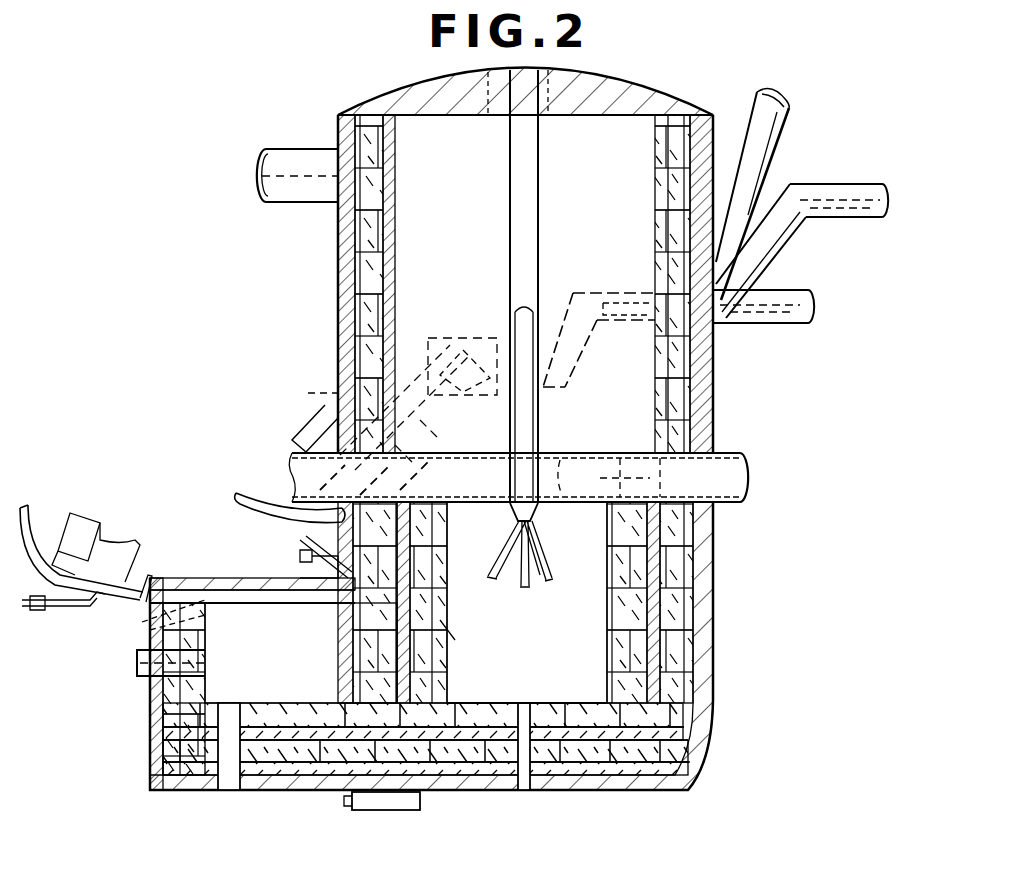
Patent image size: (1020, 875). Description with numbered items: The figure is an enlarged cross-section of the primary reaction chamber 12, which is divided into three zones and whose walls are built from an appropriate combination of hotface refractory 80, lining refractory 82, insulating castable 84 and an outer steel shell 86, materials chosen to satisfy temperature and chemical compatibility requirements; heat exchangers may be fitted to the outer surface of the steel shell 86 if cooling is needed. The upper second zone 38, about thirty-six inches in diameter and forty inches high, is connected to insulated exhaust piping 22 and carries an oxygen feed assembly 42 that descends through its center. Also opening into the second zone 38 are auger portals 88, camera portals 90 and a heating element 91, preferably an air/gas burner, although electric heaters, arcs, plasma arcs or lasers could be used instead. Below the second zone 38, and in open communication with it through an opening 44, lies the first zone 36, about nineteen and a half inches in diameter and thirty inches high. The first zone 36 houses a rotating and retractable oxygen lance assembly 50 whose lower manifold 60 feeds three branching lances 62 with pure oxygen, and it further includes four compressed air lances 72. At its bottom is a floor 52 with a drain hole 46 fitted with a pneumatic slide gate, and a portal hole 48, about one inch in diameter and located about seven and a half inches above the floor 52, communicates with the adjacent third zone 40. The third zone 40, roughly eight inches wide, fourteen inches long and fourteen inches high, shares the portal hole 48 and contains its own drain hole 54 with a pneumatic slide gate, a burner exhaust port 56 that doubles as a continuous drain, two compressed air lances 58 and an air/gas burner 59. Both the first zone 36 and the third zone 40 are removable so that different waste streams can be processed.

The primary reaction chamber 12 is at (622, 72).
The insulated exhaust piping 22 is at (318, 199).
The first zone 36 is at (591, 687).
The second zone 38 is at (470, 284).
The third zone 40 is at (306, 669).
The oxygen feed assembly 42 is at (530, 188).
The opening 44 is at (555, 470).
The drain hole 46 is at (526, 791).
The portal hole 48 is at (446, 640).
The oxygen lance assembly 50 is at (551, 541).
The floor 52 is at (486, 684).
The drain hole 54 is at (230, 790).
The burner exhaust port 56 is at (142, 666).
The compressed air lances 58 is at (148, 625).
The air/gas burner 59 is at (40, 520).
The lower manifold 60 is at (512, 519).
The branching lances 62 is at (489, 578).
The compressed air lances 72 is at (300, 542).
The hotface refractory 80 is at (385, 210).
The lining refractory 82 is at (690, 272).
The insulating castable 84 is at (345, 276).
The steel shell 86 is at (345, 320).
The auger portals 88 is at (830, 197).
The camera portals 90 is at (478, 70).
The heating element 91 is at (312, 418).